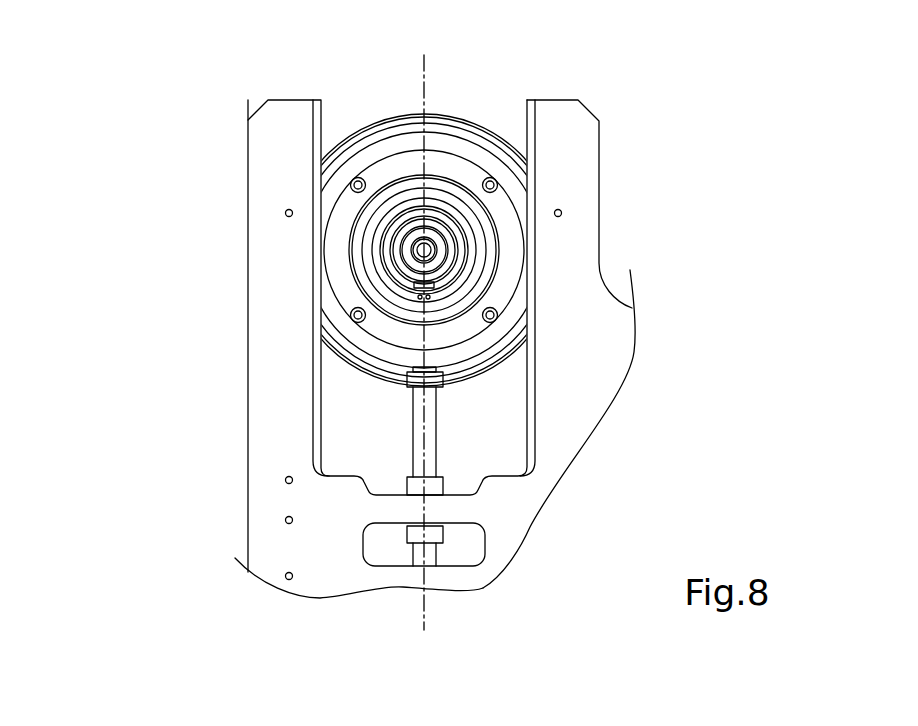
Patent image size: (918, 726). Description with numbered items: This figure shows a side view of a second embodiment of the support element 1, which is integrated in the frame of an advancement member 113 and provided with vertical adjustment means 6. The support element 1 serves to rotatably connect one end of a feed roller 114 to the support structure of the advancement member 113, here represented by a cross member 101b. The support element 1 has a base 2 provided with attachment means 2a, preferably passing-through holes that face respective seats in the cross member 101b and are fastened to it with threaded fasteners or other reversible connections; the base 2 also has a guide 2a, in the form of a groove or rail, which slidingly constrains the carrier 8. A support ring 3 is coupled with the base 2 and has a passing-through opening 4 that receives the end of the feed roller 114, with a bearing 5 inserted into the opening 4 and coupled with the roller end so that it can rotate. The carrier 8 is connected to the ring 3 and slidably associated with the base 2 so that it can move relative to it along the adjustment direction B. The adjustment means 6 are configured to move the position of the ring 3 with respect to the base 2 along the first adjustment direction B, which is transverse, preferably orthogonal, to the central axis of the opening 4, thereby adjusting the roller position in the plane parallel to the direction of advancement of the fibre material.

The support element 1 is at (198, 140).
The base 2 is at (246, 418).
The attachment means 2a is at (323, 420).
The support ring 3 is at (326, 203).
The passing-through opening 4 is at (486, 230).
The bearing 5 is at (466, 279).
The first adjustment means 6 is at (449, 442).
The carrier 8 is at (329, 321).
The advancement member 113 is at (601, 150).
The feed roller 114 is at (407, 254).
The cross member 101b is at (592, 402).
The first adjustment direction B is at (425, 77).